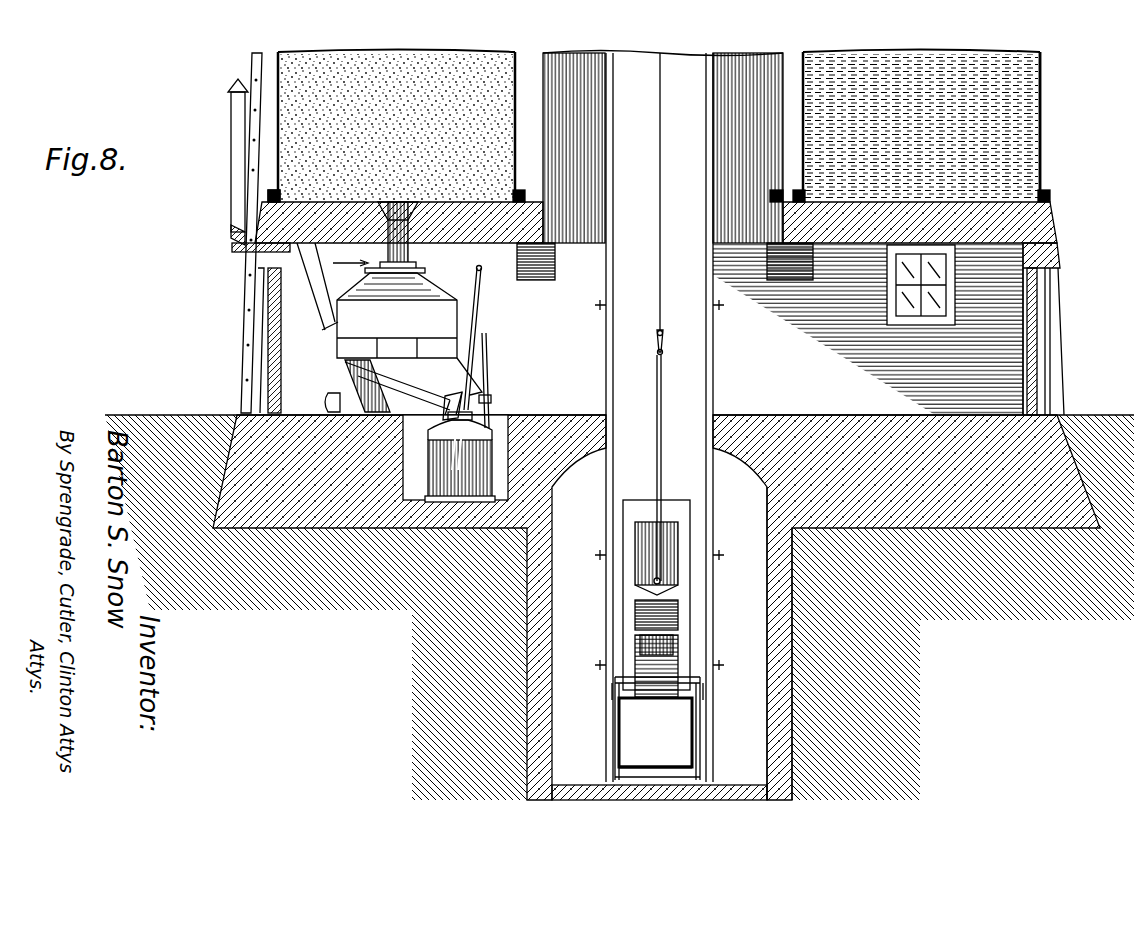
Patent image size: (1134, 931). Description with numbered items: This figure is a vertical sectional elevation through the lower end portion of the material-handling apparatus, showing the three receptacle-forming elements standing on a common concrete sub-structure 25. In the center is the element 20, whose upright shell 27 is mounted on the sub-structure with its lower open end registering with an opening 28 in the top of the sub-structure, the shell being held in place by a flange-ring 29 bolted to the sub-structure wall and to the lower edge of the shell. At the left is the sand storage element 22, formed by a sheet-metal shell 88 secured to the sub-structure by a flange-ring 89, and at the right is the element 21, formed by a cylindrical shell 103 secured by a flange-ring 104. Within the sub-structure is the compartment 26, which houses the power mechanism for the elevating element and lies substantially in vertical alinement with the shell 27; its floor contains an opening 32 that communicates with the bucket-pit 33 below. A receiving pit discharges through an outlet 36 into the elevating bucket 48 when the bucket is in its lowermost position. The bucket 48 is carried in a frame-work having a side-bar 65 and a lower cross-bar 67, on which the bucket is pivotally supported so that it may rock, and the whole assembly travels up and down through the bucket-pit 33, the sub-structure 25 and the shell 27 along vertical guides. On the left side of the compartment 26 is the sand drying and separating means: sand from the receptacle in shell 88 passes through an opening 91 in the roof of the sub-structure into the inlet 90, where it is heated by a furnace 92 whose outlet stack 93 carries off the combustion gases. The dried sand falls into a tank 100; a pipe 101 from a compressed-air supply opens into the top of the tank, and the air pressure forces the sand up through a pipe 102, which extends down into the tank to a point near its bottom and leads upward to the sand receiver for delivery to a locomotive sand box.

The centrally located element 20 is at (663, 402).
The receptacle-forming element 21 is at (916, 112).
The receptacle-forming element 22 is at (396, 113).
The sub-structure 25 is at (1062, 237).
The compartment 26 is at (868, 329).
The upright shell structure 27 is at (783, 118).
The opening 28 is at (732, 216).
The flange-ring 29 is at (778, 192).
The opening 32 is at (620, 434).
The bucket-pit 33 is at (759, 643).
The outlet 36 is at (638, 614).
The elevating bucket 48 is at (668, 727).
The side-bar 65 is at (612, 712).
The lower cross-bar 67 is at (652, 780).
The shell 88 is at (262, 67).
The flange-ring 89 is at (268, 195).
The inlet 90 is at (410, 250).
The opening 91 is at (400, 212).
The furnace 92 is at (340, 383).
The outlet stack 93 is at (231, 118).
The tank 100 is at (487, 440).
The pipe 101 is at (489, 346).
The pipe 102 is at (481, 297).
The shell 103 is at (1042, 110).
The flange-ring 104 is at (1050, 198).